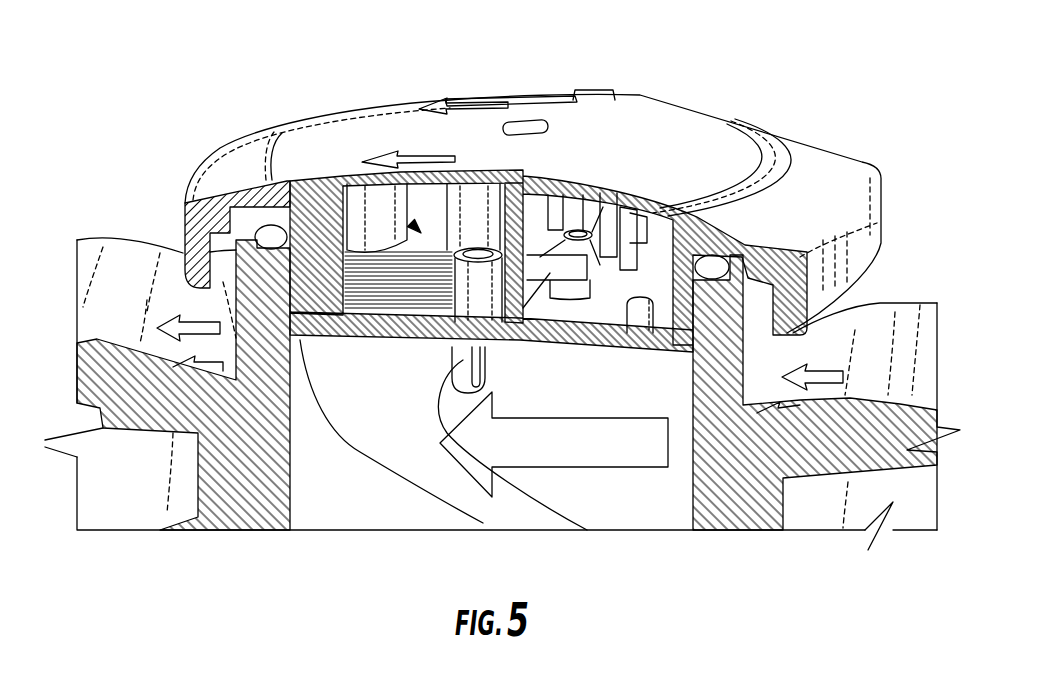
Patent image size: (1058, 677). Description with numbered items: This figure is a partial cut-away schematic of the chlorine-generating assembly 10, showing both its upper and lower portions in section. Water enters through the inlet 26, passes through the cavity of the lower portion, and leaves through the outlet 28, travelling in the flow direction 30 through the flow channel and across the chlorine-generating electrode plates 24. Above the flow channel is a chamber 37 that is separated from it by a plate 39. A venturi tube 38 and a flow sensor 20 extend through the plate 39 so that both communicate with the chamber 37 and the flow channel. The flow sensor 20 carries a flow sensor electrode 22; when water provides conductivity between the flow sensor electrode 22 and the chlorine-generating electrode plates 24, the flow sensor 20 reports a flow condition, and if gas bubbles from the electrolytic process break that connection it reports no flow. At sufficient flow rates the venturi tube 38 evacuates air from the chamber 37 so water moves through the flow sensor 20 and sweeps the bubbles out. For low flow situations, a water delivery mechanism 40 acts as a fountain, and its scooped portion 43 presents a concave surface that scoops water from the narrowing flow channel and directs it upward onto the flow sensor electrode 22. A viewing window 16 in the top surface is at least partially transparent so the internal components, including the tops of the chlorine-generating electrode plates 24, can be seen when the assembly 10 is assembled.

The chlorine-generating assembly 10 is at (533, 176).
The viewing window 16 is at (548, 179).
The flow sensor 20 is at (546, 178).
The flow sensor electrode 22 is at (563, 178).
The chlorine-generating electrode plates 24 is at (335, 204).
The inlet 26 is at (826, 373).
The outlet 28 is at (491, 356).
The flow direction 30 is at (560, 498).
The chamber 37 is at (369, 146).
The venturi tube 38 is at (455, 141).
The plate 39 is at (443, 469).
The water delivery mechanism 40 is at (423, 468).
The scooped portion 43 is at (531, 463).